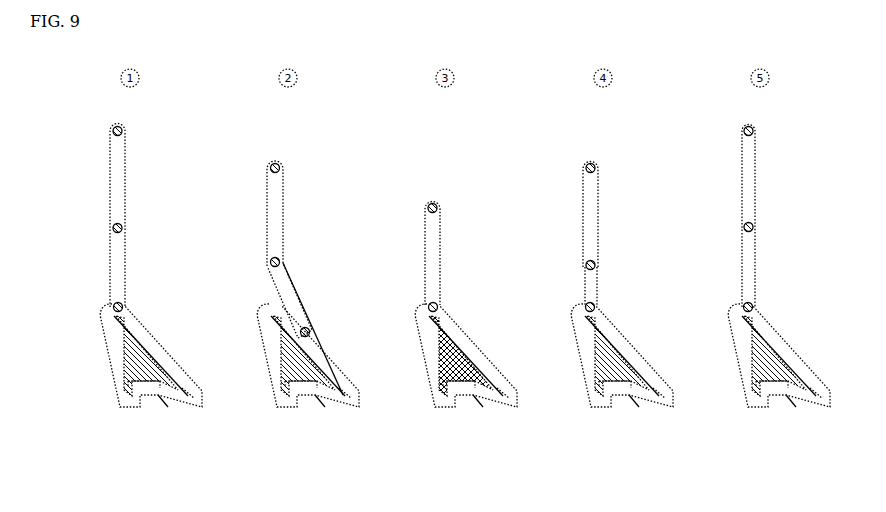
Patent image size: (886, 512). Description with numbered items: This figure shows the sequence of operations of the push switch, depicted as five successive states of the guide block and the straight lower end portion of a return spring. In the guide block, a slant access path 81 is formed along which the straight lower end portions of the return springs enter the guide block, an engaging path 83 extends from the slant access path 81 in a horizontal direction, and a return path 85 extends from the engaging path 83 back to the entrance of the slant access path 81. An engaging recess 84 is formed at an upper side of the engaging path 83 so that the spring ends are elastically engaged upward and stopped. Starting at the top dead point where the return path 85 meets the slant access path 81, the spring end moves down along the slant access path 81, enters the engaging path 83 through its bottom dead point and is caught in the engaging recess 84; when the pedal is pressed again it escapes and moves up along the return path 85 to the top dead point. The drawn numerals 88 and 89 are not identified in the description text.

The handle rod 88 is at (126, 140).
The pivot joint 89 is at (125, 297).
The slant access path 81 is at (140, 340).
The return path 85 is at (112, 358).
The engaging path 83 is at (145, 408).
The engaging recess 84 is at (157, 393).